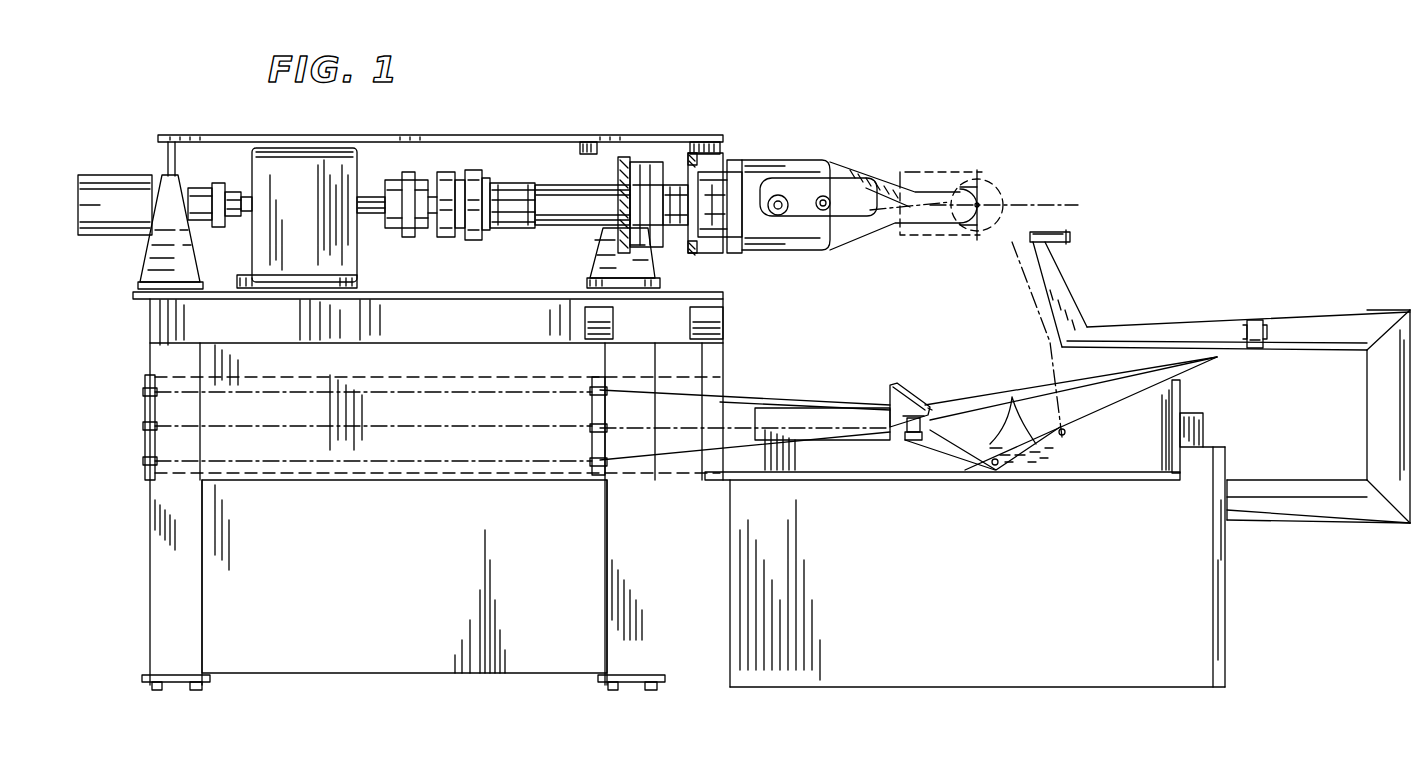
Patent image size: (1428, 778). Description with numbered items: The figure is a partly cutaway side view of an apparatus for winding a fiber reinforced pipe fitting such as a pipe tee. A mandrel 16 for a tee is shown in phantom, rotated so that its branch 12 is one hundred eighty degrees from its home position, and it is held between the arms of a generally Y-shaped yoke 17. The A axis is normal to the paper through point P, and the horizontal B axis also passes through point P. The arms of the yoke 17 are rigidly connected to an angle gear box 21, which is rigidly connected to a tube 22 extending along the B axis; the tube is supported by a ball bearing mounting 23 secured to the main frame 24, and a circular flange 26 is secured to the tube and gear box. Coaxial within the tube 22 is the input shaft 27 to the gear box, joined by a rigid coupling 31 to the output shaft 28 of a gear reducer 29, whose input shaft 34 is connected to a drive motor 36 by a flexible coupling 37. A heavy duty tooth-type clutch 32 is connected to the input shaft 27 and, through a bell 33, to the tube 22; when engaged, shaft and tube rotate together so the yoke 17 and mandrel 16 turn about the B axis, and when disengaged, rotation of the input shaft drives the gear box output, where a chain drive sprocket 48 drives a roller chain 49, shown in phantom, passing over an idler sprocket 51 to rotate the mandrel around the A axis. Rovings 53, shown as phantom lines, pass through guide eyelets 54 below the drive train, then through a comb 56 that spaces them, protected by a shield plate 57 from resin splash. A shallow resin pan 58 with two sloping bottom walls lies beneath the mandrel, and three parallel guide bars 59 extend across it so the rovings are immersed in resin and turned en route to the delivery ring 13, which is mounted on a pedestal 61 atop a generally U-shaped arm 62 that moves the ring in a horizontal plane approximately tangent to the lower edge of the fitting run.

The branch 12 is at (912, 169).
The delivery ring 13 is at (1035, 245).
The mandrel 16 is at (963, 178).
The yoke 17 is at (880, 175).
The angle gear box 21 is at (745, 170).
The tube 22 is at (565, 190).
The ball bearing mounting 23 is at (650, 160).
The main frame 24 is at (150, 322).
The circular flange 26 is at (692, 153).
The input shaft 27 is at (512, 195).
The output shaft 28 is at (370, 190).
The gear reducer 29 is at (329, 150).
The rigid coupling 31 is at (408, 180).
The tooth-type clutch 32 is at (446, 178).
The bell 33 is at (480, 175).
The input shaft 34 is at (236, 226).
The drive motor 36 is at (122, 177).
The flexible coupling 37 is at (218, 183).
The chain drive sprocket 48 is at (783, 222).
The roller chain 49 is at (910, 203).
The idler sprocket 51 is at (830, 201).
The rovings 53 is at (423, 461).
The guide eyelets 54 is at (148, 426).
The comb 56 is at (905, 430).
The shield plate 57 is at (920, 370).
The resin pan 58 is at (1094, 420).
The guide bars 59 is at (1015, 406).
The pedestal 61 is at (1083, 287).
The U-shaped arm 62 is at (1370, 310).
The point P is at (984, 204).
The B axis B is at (1013, 205).